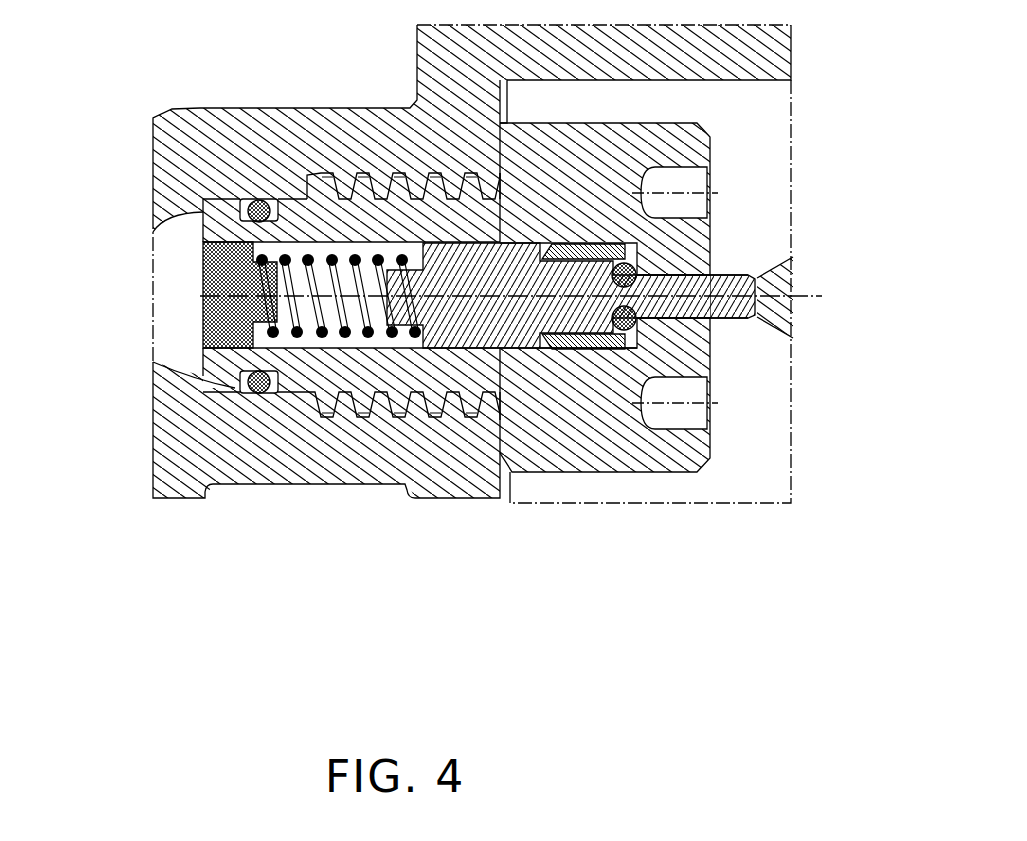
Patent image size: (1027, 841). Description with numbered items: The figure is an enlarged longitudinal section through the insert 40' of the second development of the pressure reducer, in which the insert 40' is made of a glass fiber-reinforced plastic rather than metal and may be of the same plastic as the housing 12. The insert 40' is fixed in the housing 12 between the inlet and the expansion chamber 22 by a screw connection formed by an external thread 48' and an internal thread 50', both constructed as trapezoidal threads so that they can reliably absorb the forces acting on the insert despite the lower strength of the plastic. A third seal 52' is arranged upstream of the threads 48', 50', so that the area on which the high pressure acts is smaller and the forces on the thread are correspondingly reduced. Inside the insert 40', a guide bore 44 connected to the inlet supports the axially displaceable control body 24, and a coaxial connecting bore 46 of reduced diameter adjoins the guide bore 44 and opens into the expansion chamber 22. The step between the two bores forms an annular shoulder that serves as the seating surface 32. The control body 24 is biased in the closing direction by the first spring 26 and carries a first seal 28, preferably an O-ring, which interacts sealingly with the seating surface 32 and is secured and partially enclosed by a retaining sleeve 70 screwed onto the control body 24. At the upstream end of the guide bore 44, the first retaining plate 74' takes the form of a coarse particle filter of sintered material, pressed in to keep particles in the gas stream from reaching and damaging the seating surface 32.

The housing 12 is at (176, 460).
The expansion chamber 22 is at (766, 134).
The control body 24 is at (513, 241).
The first spring 26 is at (316, 312).
The first seal 28 is at (633, 324).
The seating surface 32 is at (624, 257).
The insert 40' is at (609, 357).
The guide bore 44 is at (553, 256).
The connecting bore 46 is at (694, 312).
The external thread 48' is at (351, 377).
The internal thread 50' is at (400, 384).
The third seal 52' is at (250, 380).
The retaining sleeve 70 is at (601, 345).
The first retaining plate 74' is at (166, 311).